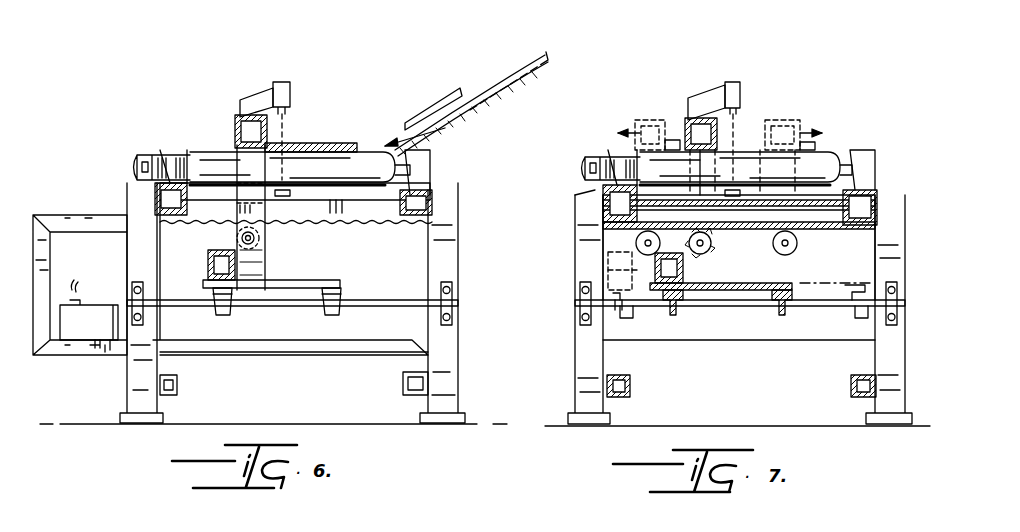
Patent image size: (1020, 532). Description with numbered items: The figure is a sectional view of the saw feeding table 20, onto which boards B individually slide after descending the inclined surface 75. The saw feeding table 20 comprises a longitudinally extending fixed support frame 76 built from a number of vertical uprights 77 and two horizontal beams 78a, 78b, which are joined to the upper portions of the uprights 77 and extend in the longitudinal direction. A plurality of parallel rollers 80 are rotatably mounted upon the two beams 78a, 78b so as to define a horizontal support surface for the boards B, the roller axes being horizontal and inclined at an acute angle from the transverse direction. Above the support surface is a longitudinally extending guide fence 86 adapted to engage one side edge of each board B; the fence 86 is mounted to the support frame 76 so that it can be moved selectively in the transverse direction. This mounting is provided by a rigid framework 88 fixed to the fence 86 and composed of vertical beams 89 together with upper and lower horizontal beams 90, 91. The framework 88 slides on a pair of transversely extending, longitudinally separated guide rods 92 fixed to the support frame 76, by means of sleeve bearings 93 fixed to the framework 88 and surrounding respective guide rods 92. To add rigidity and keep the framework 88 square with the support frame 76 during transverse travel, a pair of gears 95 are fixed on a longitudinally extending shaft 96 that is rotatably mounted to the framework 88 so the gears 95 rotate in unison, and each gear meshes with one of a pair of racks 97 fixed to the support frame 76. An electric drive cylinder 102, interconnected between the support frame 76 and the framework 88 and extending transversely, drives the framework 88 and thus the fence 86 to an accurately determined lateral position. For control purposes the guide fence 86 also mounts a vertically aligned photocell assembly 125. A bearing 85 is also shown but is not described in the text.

In FIG. 6, the saw feeding table 20 is at (215, 143).
In FIG. 7, the saw feeding table 20 is at (823, 135).
In FIG. 6, the inclined surface 75 is at (417, 140).
In FIG. 6, the fixed support frame 76 is at (445, 362).
In FIG. 7, the fixed support frame 76 is at (895, 352).
In FIG. 6, the vertical uprights 77 is at (127, 366).
In FIG. 7, the vertical uprights 77 is at (575, 383).
In FIG. 6, the horizontal beam 78a is at (160, 200).
In FIG. 7, the horizontal beam 78a is at (603, 205).
In FIG. 6, the horizontal beam 78b is at (420, 200).
In FIG. 7, the horizontal beam 78b is at (865, 200).
In FIG. 6, the rollers 80 is at (365, 150).
In FIG. 7, the rollers 80 is at (825, 165).
In FIG. 6, the bearing 85 is at (160, 150).
In FIG. 7, the bearing 85 is at (611, 168).
In FIG. 7, the guide fence 86 is at (720, 135).
In FIG. 6, the rigid framework 88 is at (250, 113).
In FIG. 7, the rigid framework 88 is at (700, 118).
In FIG. 6, the vertical beams 89 is at (245, 215).
In FIG. 6, the upper horizontal beam 90 is at (235, 125).
In FIG. 7, the upper horizontal beam 90 is at (685, 128).
In FIG. 6, the lower horizontal beam 91 is at (208, 263).
In FIG. 7, the lower horizontal beam 91 is at (655, 270).
In FIG. 6, the guide rods 92 is at (378, 306).
In FIG. 7, the guide rods 92 is at (735, 306).
In FIG. 6, the sleeve bearings 93 is at (322, 318).
In FIG. 7, the sleeve bearings 93 is at (670, 318).
In FIG. 7, the gears 95 is at (712, 236).
In FIG. 6, the shaft 96 is at (256, 240).
In FIG. 7, the shaft 96 is at (700, 255).
In FIG. 6, the racks 97 is at (333, 225).
In FIG. 7, the racks 97 is at (825, 229).
In FIG. 6, the electric drive cylinder 102 is at (98, 300).
In FIG. 6, the photocell assembly 125 is at (316, 60).
In FIG. 7, the photocell assembly 125 is at (770, 58).
In FIG. 6, the boards B is at (305, 142).